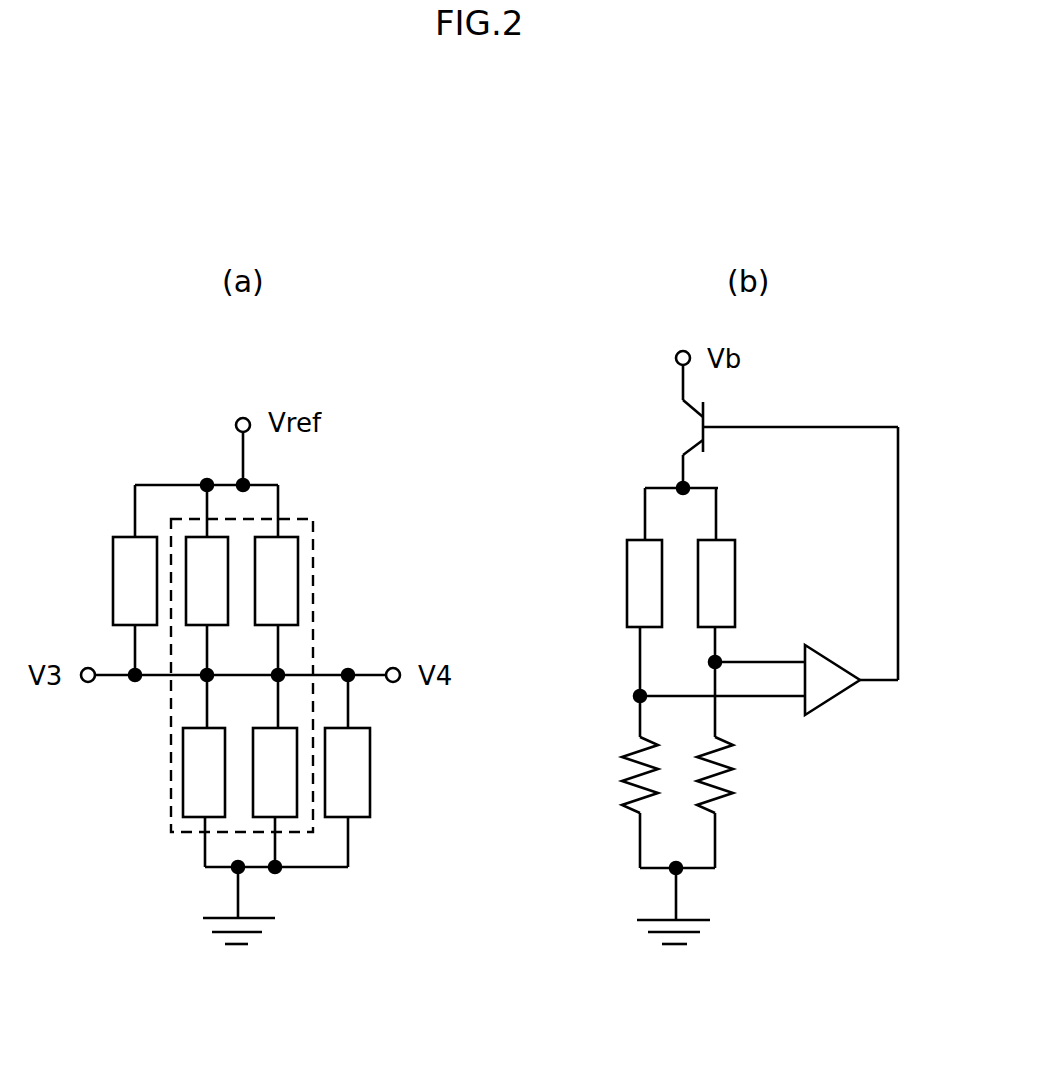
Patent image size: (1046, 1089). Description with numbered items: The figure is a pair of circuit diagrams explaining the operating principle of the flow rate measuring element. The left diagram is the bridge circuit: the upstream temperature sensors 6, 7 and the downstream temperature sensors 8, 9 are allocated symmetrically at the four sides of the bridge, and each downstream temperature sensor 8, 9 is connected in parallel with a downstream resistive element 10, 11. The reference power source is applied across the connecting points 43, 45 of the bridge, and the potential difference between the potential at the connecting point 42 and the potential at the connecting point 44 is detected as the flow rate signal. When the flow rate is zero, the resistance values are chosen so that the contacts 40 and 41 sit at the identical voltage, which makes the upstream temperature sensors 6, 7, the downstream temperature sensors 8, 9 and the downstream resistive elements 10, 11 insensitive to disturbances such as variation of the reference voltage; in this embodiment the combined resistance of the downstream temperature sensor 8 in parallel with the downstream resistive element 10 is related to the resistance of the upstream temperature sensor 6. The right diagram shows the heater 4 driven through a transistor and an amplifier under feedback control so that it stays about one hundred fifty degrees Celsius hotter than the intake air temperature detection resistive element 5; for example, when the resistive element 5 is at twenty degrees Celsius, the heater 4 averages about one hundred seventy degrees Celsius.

The heater 4 is at (650, 550).
The intake air temperature detection resistive element 5 is at (725, 570).
The upstream temperature sensor 6 is at (298, 550).
The upstream temperature sensor 7 is at (187, 818).
The downstream temperature sensor 8 is at (186, 537).
The downstream temperature sensor 9 is at (295, 815).
The downstream resistive element 10 is at (113, 562).
The downstream resistive element 11 is at (370, 775).
The contact 40 is at (86, 683).
The contact 41 is at (394, 667).
The connecting point 42 is at (134, 682).
The connecting point 43 is at (207, 482).
The connecting point 44 is at (349, 668).
The connecting point 45 is at (277, 873).